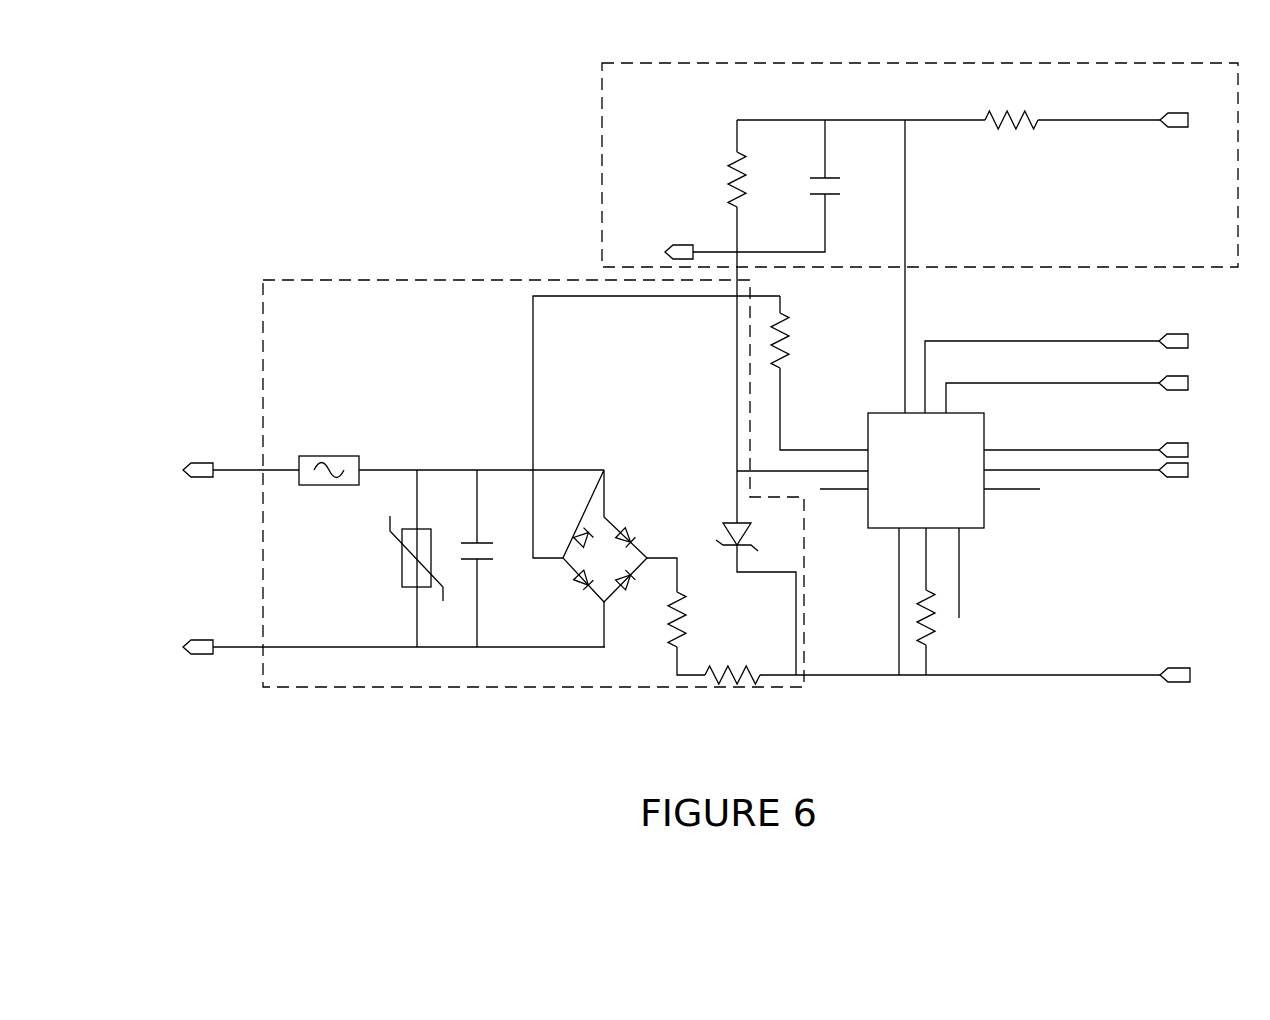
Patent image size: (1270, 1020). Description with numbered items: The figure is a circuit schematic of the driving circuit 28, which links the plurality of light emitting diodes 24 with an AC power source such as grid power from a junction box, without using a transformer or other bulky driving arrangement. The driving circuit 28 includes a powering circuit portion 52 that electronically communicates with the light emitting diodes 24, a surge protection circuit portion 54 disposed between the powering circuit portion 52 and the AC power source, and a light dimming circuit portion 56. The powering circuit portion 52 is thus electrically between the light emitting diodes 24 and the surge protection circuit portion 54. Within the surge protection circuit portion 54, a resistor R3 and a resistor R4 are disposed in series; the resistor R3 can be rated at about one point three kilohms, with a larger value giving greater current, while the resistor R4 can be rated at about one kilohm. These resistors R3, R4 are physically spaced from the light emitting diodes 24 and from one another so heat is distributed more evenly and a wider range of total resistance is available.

The driving circuit 28 is at (398, 167).
The surge protection circuit portion 54 is at (310, 280).
The light dimming circuit portion 56 is at (601, 113).
The powering circuit portion 52 is at (1048, 698).
The light emitting diodes 24 is at (1184, 406).
The resistor R3 is at (747, 697).
The resistor R4 is at (660, 620).